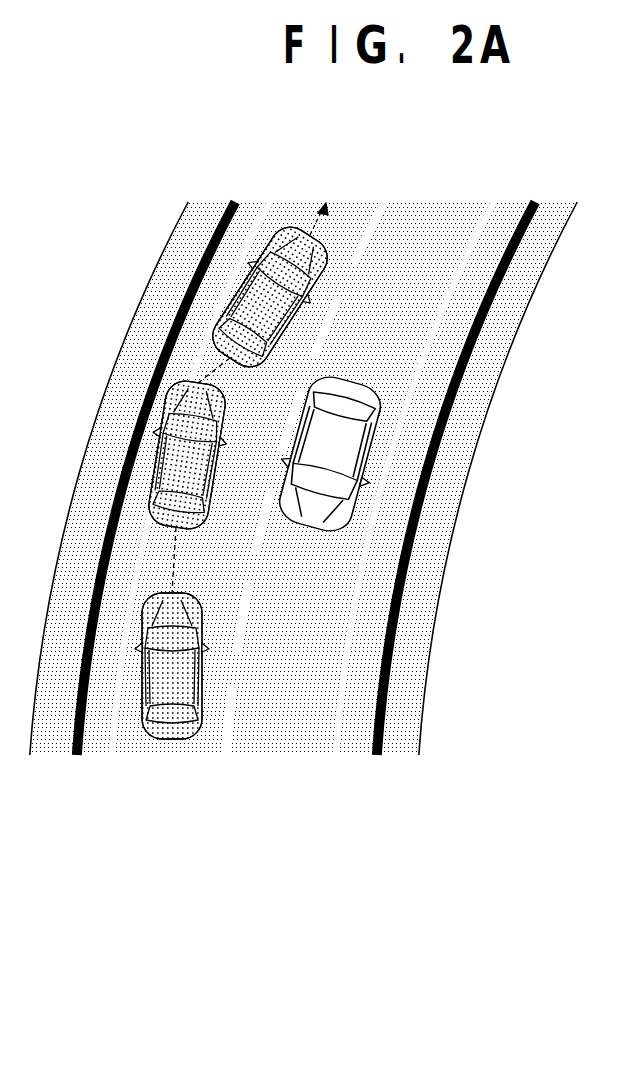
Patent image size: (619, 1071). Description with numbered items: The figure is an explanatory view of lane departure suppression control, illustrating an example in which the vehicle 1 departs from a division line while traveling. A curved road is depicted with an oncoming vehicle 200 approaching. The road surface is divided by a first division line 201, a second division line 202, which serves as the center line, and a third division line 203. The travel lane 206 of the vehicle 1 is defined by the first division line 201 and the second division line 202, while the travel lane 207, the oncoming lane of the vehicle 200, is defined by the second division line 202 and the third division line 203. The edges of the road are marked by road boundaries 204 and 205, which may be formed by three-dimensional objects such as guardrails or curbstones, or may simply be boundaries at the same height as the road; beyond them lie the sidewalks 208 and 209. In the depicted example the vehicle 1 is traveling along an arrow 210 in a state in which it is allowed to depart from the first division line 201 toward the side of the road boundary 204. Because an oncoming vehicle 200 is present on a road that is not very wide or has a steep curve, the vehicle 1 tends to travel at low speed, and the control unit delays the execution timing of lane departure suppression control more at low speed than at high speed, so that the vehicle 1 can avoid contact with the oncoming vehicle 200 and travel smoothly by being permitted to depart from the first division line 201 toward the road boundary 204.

The vehicle 1 is at (320, 286).
The oncoming vehicle 200 is at (343, 531).
The first division line 201 is at (269, 206).
The second division line (center line) 202 is at (383, 206).
The third division line 203 is at (493, 206).
The road boundary 204 is at (78, 758).
The road boundary 205 is at (377, 758).
The travel lane 206 is at (170, 758).
The travel lane (oncoming lane) 207 is at (278, 758).
The sidewalk 208 is at (206, 216).
The sidewalk 209 is at (549, 216).
The arrow 210 is at (330, 228).